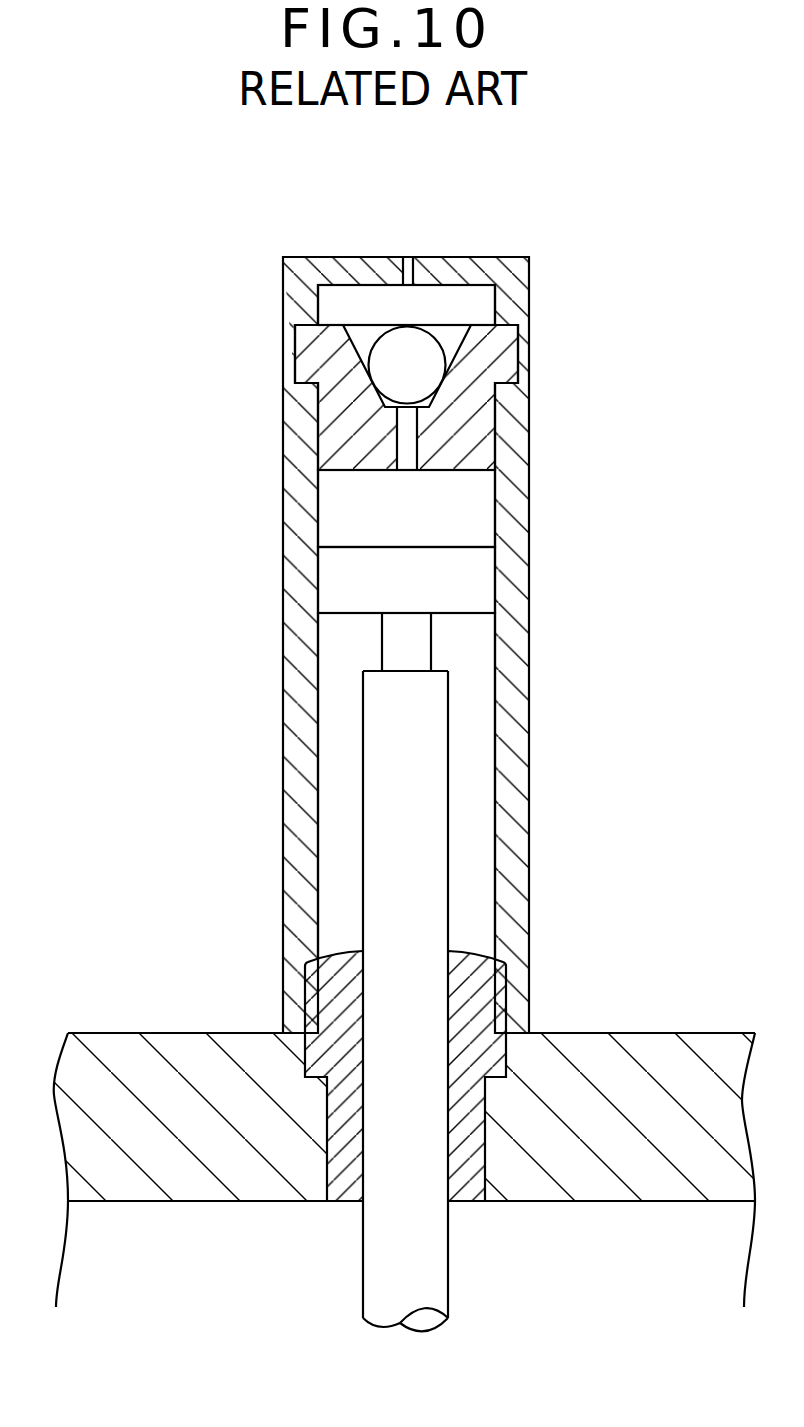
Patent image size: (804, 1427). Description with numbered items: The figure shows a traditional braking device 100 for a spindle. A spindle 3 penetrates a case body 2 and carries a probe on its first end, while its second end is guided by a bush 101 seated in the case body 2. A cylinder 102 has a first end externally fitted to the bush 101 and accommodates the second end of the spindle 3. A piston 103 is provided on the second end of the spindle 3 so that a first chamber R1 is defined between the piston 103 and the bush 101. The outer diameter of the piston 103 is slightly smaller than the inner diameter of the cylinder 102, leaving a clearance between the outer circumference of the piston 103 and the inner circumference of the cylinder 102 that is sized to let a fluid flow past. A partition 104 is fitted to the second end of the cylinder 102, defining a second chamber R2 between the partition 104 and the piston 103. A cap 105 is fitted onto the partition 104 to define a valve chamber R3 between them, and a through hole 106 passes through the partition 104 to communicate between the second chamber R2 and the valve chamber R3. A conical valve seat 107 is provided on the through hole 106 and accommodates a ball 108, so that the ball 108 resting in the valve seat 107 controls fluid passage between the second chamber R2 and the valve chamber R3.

The braking device 100 is at (554, 176).
The cap 105 is at (455, 257).
The valve chamber R3 is at (460, 300).
The conical valve seat 107 is at (352, 335).
The ball 108 is at (380, 362).
The partition 104 is at (508, 358).
The through hole 106 is at (400, 430).
The cylinder 102 is at (522, 500).
The second chamber R2 is at (465, 513).
The piston 103 is at (482, 602).
The first chamber R1 is at (472, 766).
The spindle 3 is at (438, 855).
The case body 2 is at (657, 1033).
The bush 101 is at (475, 1164).